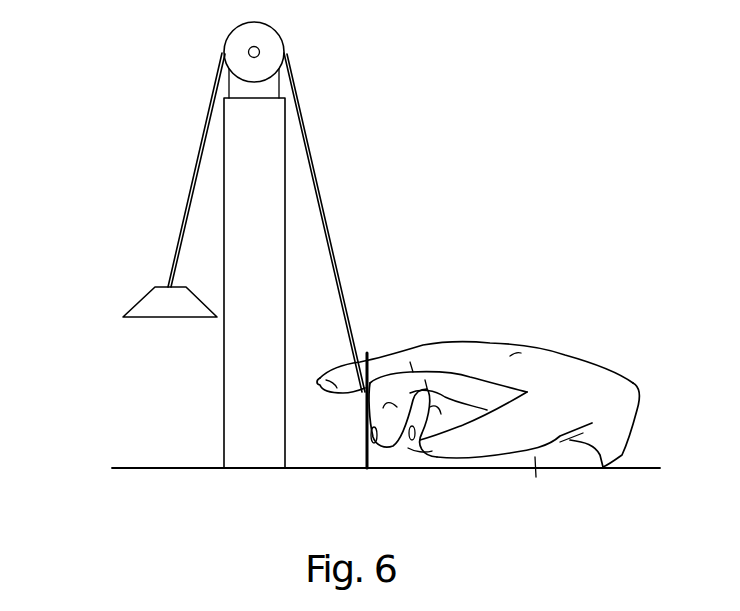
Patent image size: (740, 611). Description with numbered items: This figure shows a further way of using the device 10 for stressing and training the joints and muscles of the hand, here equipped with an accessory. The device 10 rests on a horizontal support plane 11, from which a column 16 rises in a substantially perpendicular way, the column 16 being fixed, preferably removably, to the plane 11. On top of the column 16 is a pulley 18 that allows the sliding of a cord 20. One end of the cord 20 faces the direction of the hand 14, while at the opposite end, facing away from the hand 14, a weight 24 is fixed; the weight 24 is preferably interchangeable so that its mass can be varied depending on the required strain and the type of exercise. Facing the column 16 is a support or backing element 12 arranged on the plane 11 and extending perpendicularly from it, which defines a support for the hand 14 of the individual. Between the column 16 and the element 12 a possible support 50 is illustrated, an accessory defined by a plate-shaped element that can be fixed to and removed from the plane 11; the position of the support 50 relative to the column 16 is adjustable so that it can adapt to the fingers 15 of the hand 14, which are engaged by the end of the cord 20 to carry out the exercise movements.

The device for stressing and training the joints and muscles of the hand 10 is at (360, 91).
The support plane 11 is at (192, 468).
The support element 12 is at (535, 457).
The hand 14 is at (567, 340).
The fingers 15 is at (388, 362).
The column 16 is at (255, 170).
The pulley 18 is at (270, 37).
The cord 20 is at (316, 209).
The weight 24 is at (155, 303).
The possible support 50 is at (355, 450).